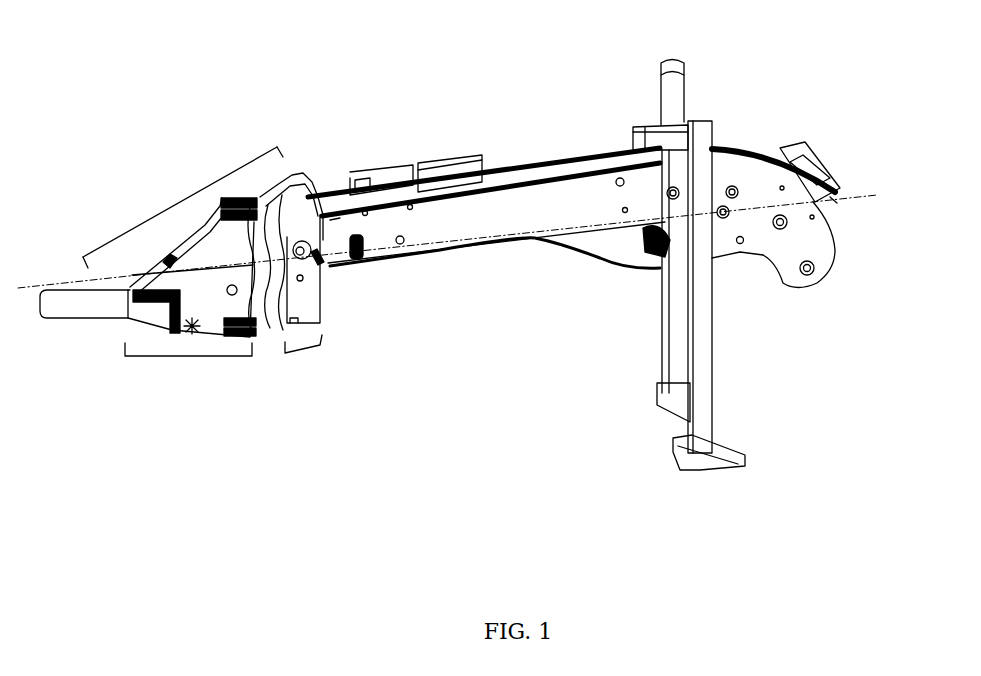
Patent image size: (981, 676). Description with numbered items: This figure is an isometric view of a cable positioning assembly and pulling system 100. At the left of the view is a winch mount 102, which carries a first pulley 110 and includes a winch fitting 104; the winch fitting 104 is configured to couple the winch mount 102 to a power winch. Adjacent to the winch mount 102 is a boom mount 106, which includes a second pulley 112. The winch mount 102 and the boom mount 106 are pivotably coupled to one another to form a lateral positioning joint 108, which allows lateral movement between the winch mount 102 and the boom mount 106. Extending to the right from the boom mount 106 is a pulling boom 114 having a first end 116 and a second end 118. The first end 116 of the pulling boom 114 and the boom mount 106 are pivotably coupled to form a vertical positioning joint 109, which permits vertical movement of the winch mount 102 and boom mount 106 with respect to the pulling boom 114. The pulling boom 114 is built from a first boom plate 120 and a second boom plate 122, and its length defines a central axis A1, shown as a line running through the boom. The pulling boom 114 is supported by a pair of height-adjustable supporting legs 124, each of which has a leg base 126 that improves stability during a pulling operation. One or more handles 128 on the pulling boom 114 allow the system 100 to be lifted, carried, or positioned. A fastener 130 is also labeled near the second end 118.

The cable positioning assembly and pulling system 100 is at (305, 573).
The winch mount 102 is at (188, 357).
The winch fitting 104 is at (65, 323).
The boom mount 106 is at (307, 350).
The lateral positioning joint 108 is at (178, 203).
The vertical positioning joint 109 is at (415, 175).
The first pulley 110 is at (262, 336).
The second pulley 112 is at (300, 177).
The pulling boom 114 is at (578, 238).
The first end 116 is at (340, 218).
The second end 118 is at (810, 292).
The first boom plate 120 is at (496, 170).
The second boom plate 122 is at (498, 190).
The supporting legs 124 is at (682, 357).
The leg base 126 is at (692, 443).
The handles 128 is at (381, 160).
The fastener 130 is at (798, 290).
The central axis A1 is at (810, 194).